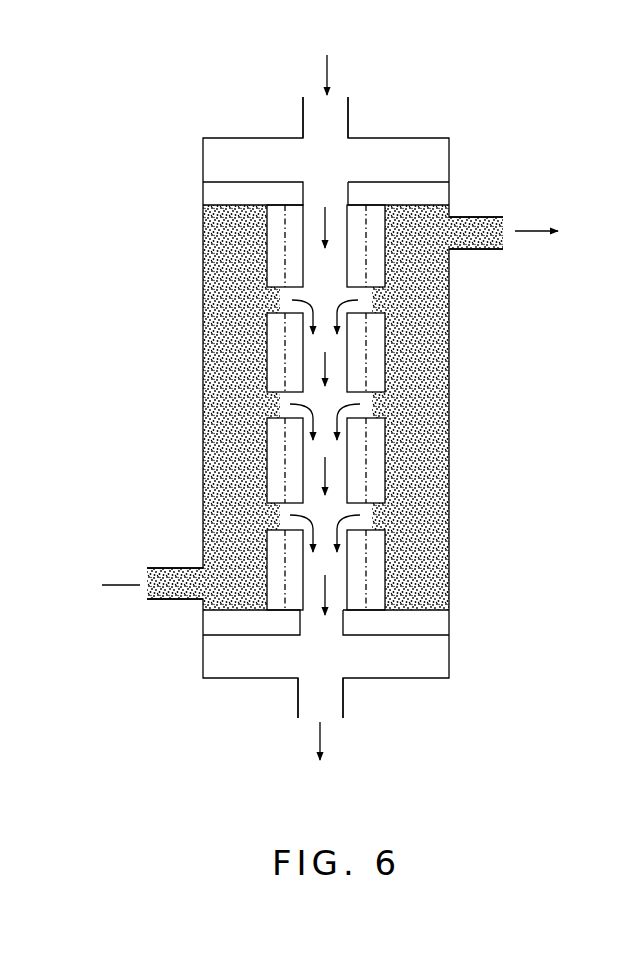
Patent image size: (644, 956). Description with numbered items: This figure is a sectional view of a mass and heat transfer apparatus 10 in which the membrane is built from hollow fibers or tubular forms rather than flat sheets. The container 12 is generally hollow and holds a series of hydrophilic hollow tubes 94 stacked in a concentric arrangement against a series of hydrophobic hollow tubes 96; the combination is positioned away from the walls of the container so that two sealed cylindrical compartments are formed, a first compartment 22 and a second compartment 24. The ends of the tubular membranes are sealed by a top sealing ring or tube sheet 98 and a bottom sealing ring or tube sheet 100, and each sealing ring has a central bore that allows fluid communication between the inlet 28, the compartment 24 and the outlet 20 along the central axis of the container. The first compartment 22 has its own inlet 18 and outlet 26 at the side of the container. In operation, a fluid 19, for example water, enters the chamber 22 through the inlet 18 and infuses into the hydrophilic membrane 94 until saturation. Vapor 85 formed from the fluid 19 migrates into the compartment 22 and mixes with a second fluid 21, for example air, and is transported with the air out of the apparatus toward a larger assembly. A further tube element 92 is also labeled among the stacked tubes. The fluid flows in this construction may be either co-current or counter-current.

The mass and heat transfer apparatus 10 is at (497, 143).
The container 12 is at (453, 315).
The inlet 18 is at (150, 590).
The fluid 19 is at (128, 585).
The inlet 20 is at (335, 105).
The second fluid 21 is at (329, 85).
The first compartment 22 is at (247, 270).
The second compartment 24 is at (340, 281).
The outlet 26 is at (502, 223).
The inlet 28 is at (311, 715).
The vapor 85 is at (292, 300).
The tube core 92 is at (353, 478).
The hydrophilic hollow tubes 94 is at (273, 442).
The hydrophobic hollow tubes 96 is at (363, 373).
The top sealing ring or tube sheet 98 is at (223, 195).
The bottom sealing ring or tube sheet 100 is at (428, 625).